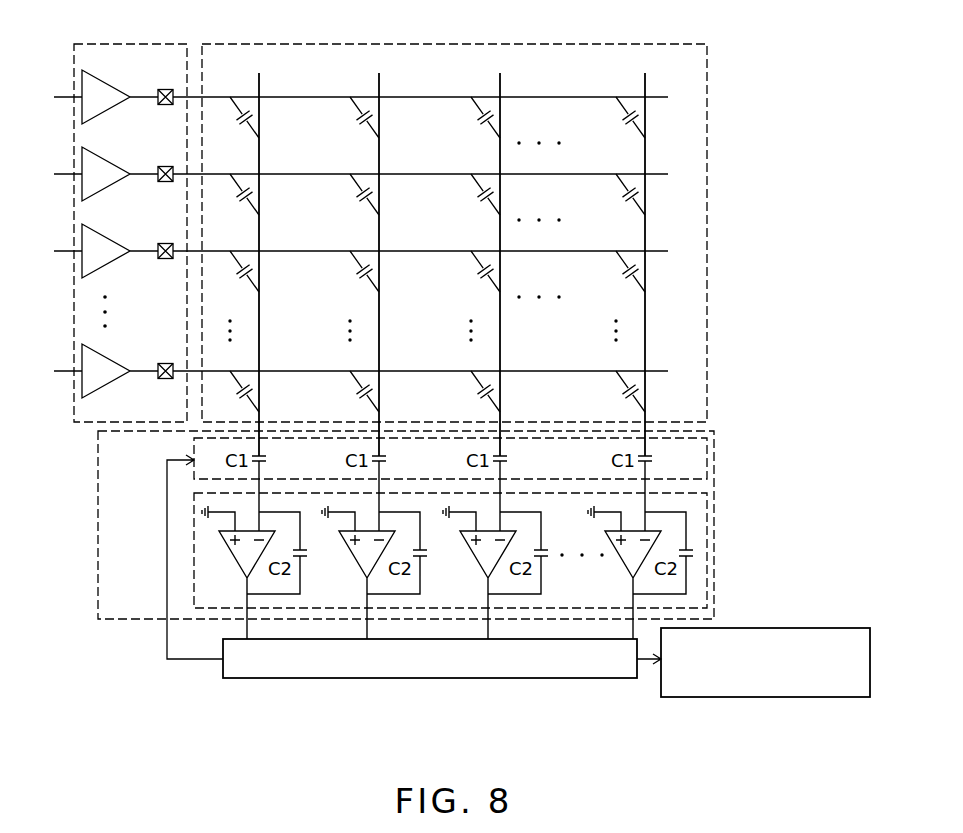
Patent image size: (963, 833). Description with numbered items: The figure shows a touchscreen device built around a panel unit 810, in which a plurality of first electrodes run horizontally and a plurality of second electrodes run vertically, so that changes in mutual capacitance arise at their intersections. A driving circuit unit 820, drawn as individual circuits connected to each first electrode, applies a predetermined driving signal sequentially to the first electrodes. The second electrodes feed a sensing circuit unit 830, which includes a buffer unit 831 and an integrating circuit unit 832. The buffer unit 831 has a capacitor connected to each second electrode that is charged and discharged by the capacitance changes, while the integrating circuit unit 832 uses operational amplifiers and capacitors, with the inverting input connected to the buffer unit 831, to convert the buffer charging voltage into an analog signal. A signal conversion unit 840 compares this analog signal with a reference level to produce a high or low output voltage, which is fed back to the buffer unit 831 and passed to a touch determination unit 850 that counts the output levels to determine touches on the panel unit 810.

The panel unit 810 is at (470, 44).
The driving circuit unit 820 is at (127, 44).
The sensing circuit unit 830 is at (405, 555).
The buffer unit 831 is at (194, 443).
The integrating circuit unit 832 is at (194, 548).
The signal conversion unit 840 is at (443, 680).
The touch determination unit 850 is at (751, 700).